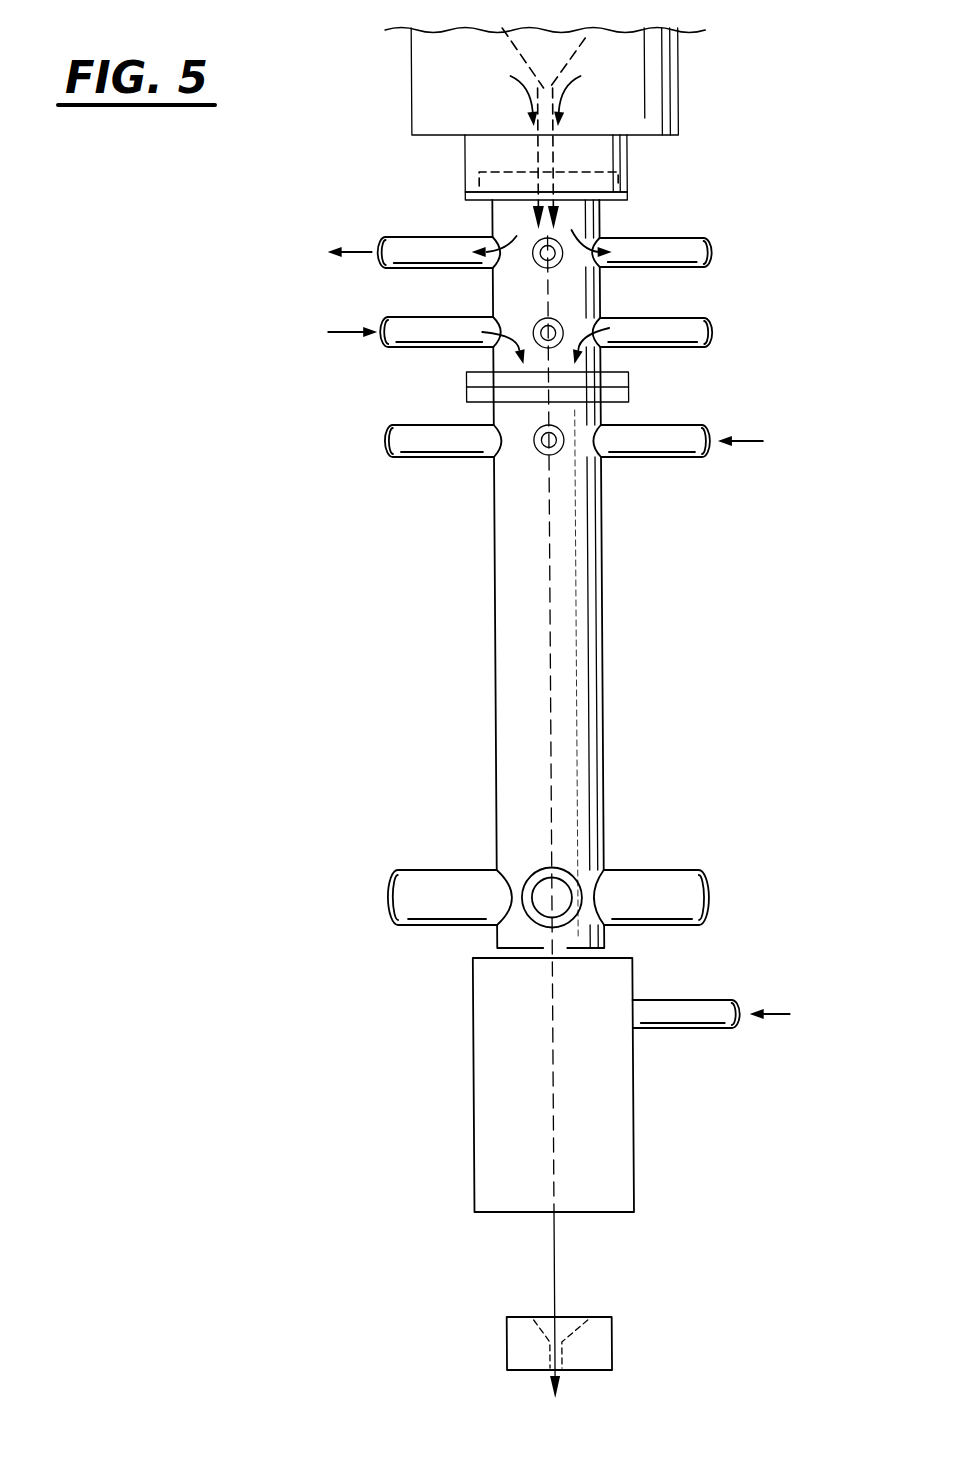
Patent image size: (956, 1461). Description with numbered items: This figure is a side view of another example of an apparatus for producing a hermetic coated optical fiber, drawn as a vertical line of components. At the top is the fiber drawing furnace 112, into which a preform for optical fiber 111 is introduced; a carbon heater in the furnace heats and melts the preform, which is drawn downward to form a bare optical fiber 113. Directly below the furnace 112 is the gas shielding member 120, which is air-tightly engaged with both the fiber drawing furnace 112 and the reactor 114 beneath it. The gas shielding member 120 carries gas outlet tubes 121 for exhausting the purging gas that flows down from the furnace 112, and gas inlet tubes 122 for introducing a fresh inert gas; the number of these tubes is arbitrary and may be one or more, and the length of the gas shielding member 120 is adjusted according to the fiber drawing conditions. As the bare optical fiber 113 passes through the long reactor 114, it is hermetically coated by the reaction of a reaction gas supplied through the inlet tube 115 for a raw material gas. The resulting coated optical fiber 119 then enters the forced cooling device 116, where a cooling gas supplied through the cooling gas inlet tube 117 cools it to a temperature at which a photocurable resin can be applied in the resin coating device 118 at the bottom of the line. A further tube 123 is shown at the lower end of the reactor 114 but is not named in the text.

The preform for optical fiber 111 is at (585, 42).
The fiber drawing furnace 112 is at (678, 105).
The bare optical fiber 113 is at (533, 232).
The reactor 114 is at (491, 620).
The inlet tube for a raw material gas 115 is at (659, 457).
The forced cooling device 116 is at (449, 1105).
The cooling gas inlet tube 117 is at (694, 1000).
The resin coating device 118 is at (498, 1352).
The coated optical fiber 119 is at (546, 1288).
The gas shielding member 120 is at (612, 220).
The gas outlet tubes 121 is at (701, 240).
The gas inlet tubes 122 is at (696, 318).
The discharge pipe 123 is at (664, 868).